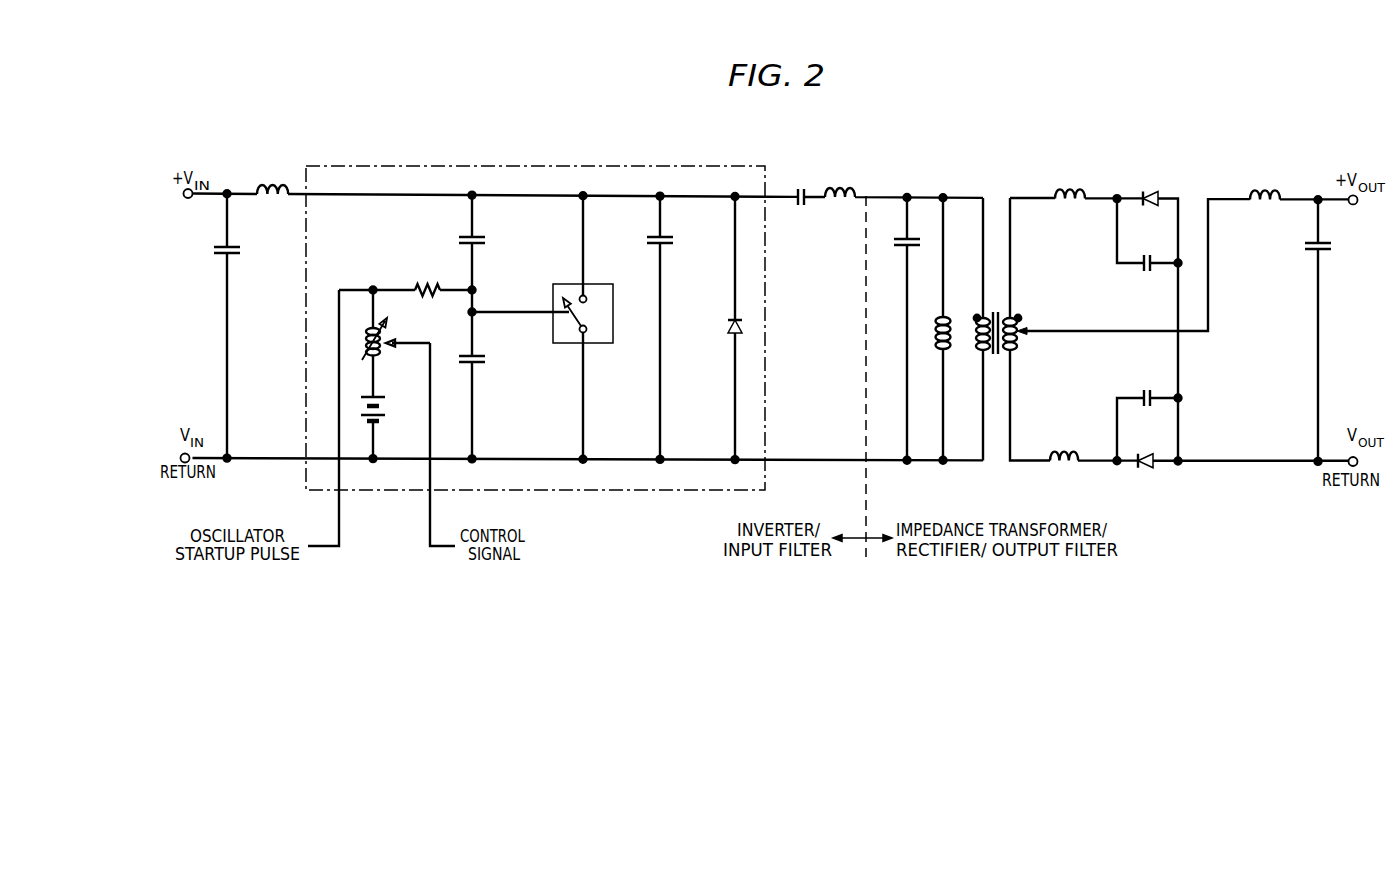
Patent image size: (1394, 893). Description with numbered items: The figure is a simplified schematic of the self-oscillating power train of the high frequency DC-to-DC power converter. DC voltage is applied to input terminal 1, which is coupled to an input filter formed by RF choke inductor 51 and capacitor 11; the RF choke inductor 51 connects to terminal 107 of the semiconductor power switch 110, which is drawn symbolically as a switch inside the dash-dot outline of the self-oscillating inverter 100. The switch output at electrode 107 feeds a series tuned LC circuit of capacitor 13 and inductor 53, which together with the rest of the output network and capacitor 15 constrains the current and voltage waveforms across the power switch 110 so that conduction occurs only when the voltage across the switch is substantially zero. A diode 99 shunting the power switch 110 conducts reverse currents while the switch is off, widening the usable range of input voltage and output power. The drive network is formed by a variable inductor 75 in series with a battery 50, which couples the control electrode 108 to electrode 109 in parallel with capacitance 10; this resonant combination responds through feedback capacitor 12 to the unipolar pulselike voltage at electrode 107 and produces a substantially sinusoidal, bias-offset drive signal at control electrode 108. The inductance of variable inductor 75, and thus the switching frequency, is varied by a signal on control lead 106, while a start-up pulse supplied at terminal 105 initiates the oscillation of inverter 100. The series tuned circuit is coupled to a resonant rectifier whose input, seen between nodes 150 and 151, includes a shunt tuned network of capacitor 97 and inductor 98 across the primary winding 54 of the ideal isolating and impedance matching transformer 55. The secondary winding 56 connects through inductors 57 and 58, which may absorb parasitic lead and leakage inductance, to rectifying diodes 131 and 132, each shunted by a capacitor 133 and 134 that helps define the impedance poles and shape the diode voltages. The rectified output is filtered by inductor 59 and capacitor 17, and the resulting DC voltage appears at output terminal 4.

The input terminal 1 is at (209, 197).
The output terminal 4 is at (1331, 203).
The capacitance 10 is at (481, 375).
The capacitor 11 is at (236, 325).
The feedback capacitor 12 is at (481, 241).
The capacitor 13 is at (809, 182).
The capacitor 15 is at (667, 328).
The capacitor 17 is at (1309, 330).
The battery 50 is at (384, 429).
The RF choke inductor 51 is at (272, 179).
The inductor 53 is at (904, 181).
The primary winding 54 is at (983, 313).
The ideal isolating and impedance matching transformer 55 is at (1012, 188).
The secondary winding 56 is at (1016, 335).
The inductor 57 is at (1099, 182).
The inductor 58 is at (1094, 445).
The inductor 59 is at (1299, 184).
The variable inductor 75 is at (367, 343).
The capacitor 97 is at (917, 329).
The inductor 98 is at (931, 329).
The diode 99 is at (724, 328).
The inverter 100 is at (344, 166).
The terminal 105 is at (340, 536).
The control lead 106 is at (420, 517).
The terminal 107 is at (586, 247).
The control terminal 108 is at (523, 312).
The terminal 109 is at (586, 390).
The semiconductor power switch 110 is at (613, 326).
The rectifying diode 131 is at (1146, 315).
The rectifying diode 132 is at (1231, 450).
The capacitor 133 is at (1149, 235).
The capacitor 134 is at (1149, 411).
The node 150 is at (909, 185).
The node 151 is at (904, 470).